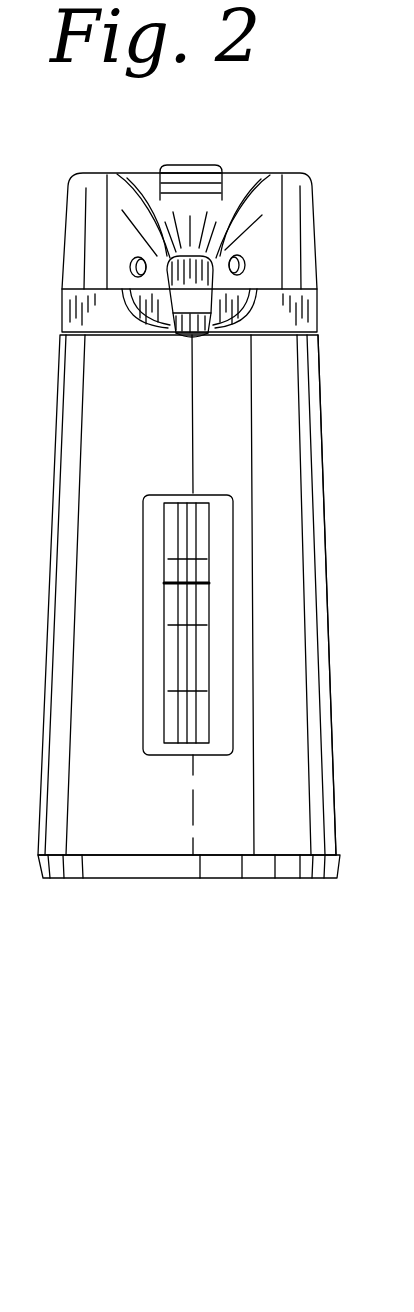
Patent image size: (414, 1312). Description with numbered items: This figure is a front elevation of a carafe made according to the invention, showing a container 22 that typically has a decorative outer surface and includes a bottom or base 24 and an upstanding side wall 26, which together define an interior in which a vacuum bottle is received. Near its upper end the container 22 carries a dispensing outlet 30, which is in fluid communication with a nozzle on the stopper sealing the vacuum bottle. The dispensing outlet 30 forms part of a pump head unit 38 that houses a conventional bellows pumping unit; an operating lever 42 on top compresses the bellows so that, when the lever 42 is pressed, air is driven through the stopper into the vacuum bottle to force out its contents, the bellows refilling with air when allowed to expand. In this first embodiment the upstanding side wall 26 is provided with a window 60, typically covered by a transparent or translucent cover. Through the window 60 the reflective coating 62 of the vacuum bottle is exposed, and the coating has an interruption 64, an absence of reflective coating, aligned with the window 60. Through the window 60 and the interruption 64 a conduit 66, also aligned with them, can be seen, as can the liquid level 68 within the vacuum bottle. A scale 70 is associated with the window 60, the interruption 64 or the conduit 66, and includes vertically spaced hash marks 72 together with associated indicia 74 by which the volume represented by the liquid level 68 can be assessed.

The container 22 is at (319, 431).
The base 24 is at (327, 867).
The upstanding side wall 26 is at (322, 550).
The dispensing outlet 30 is at (190, 338).
The pump head unit 38 is at (283, 154).
The operating lever 42 is at (188, 166).
The window 60 is at (228, 534).
The reflective coating 62 is at (225, 514).
The interruption 64 is at (200, 520).
The conduit 66 is at (187, 663).
The liquid level 68 is at (167, 583).
The scale 70 is at (168, 632).
The hash marks 72 is at (182, 559).
The indicia 74 is at (233, 560).